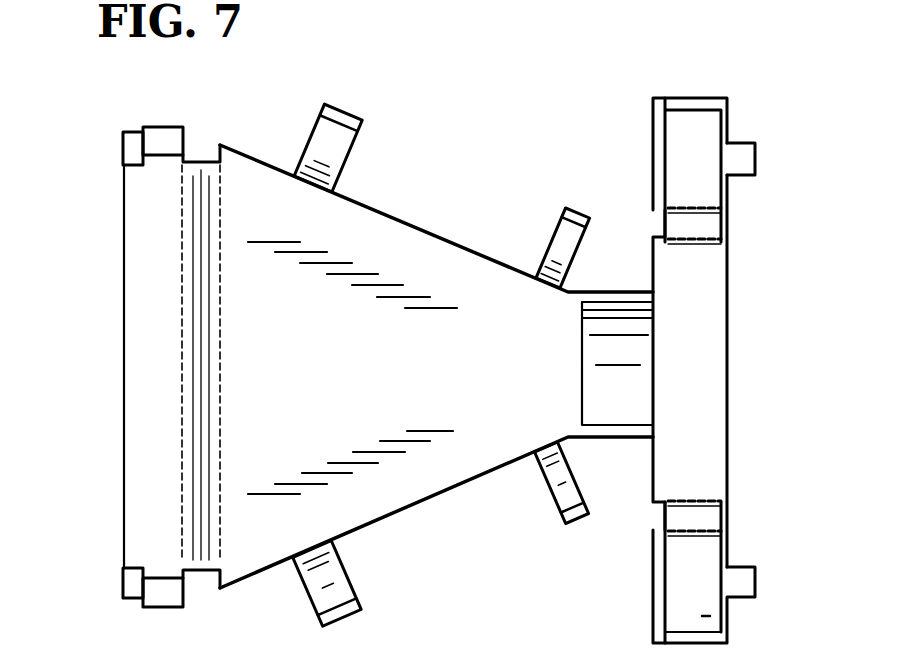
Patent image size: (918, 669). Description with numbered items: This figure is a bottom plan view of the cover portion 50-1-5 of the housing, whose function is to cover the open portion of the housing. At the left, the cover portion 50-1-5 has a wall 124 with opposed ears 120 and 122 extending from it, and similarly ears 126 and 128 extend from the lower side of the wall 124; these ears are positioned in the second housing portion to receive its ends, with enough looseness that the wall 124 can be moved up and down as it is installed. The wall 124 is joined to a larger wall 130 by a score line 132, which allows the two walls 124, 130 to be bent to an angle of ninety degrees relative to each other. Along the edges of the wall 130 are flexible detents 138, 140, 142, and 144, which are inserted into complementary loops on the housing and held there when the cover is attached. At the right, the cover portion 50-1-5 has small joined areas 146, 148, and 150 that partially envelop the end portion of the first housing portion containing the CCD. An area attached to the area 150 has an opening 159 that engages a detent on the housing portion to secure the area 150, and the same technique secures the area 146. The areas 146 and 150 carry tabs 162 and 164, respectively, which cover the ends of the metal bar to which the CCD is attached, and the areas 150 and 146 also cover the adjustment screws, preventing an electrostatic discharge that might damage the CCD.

The cover portion 50-1-5 is at (402, 222).
The ear 120 is at (132, 582).
The ear 122 is at (168, 596).
The wall 124 is at (145, 345).
The ear 126 is at (131, 148).
The ear 128 is at (164, 138).
The wall 130 is at (413, 401).
The score line 132 is at (222, 344).
The flexible detent 138 is at (308, 602).
The flexible detent 140 is at (548, 495).
The flexible detent 142 is at (338, 114).
The flexible detent 144 is at (571, 210).
The joined area 146 is at (692, 127).
The joined area 148 is at (714, 377).
The joined area 150 is at (745, 586).
The opening 159 is at (565, 668).
The tab 162 is at (745, 157).
The tab 164 is at (714, 616).